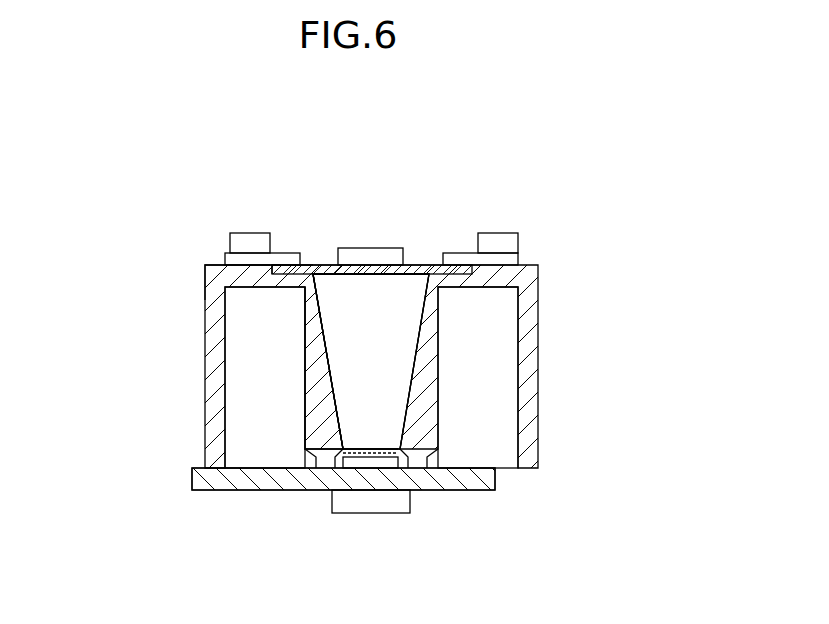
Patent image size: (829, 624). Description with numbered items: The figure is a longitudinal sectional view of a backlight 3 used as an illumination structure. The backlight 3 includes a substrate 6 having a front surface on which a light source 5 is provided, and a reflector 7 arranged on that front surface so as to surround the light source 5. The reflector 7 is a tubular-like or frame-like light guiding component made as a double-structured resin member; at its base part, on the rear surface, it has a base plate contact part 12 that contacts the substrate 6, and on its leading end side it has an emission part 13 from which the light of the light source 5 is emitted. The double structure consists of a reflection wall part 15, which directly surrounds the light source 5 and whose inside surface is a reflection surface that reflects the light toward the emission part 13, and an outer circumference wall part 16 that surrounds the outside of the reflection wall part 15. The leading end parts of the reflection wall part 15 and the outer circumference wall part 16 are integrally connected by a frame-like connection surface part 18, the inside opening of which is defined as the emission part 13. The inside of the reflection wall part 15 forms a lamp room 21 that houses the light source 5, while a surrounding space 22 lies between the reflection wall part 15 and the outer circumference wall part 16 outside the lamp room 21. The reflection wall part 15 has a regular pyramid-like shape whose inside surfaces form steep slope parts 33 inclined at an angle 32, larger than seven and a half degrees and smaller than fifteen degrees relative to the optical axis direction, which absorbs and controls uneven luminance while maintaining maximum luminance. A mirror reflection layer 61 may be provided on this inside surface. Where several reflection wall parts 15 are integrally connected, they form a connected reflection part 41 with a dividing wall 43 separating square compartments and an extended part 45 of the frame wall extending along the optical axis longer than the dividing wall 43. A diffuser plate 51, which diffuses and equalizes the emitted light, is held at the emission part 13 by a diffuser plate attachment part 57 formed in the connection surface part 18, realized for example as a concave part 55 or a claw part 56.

The backlight 3 is at (557, 218).
The light source 5 is at (363, 463).
The substrate 6 is at (450, 492).
The reflector 7 is at (100, 343).
The base plate contact part 12 is at (195, 468).
The emission part 13 is at (310, 328).
The reflection wall part 15 is at (201, 361).
The connected reflection part 41 is at (300, 317).
The outer circumference wall part 16 is at (203, 270).
The connection surface part 18 is at (232, 245).
The lamp room 21 is at (360, 322).
The surrounding space 22 is at (243, 413).
The angle 32 is at (429, 274).
The steep slope part 33 is at (372, 410).
The mirror reflection layer 61 is at (370, 462).
The dividing wall 43 is at (378, 330).
The extended part 45 is at (423, 303).
The diffuser plate 51 is at (412, 262).
The concave part 55 is at (282, 257).
The claw part 56 is at (302, 266).
The diffuser plate attachment part 57 is at (307, 143).